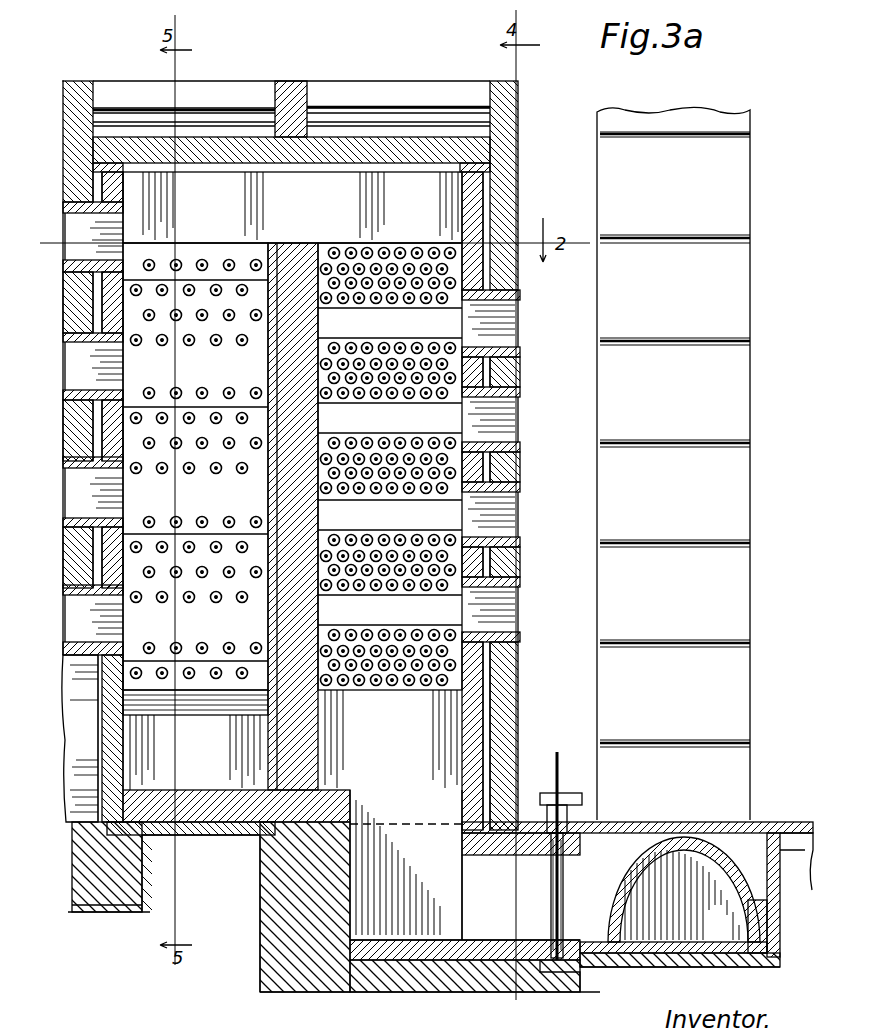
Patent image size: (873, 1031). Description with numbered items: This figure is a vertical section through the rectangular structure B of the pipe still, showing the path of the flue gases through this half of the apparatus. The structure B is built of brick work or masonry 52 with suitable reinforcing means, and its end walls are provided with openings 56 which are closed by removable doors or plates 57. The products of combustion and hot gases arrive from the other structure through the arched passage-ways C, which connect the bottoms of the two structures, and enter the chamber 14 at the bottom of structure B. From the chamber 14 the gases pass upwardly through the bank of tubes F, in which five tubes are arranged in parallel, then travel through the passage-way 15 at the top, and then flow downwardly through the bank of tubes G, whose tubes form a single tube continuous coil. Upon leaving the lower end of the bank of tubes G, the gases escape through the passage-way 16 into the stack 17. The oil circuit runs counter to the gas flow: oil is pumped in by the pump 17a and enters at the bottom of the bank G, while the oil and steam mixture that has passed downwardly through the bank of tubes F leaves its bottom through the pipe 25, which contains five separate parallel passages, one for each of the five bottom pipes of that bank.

The rectangular structure B is at (497, 128).
The passage-way 15 is at (304, 212).
The bank of tubes F is at (197, 303).
The bank of tubes G is at (408, 347).
The openings 56 is at (123, 228).
The removable doors or plates 57 is at (60, 355).
The brick work or masonry 52 is at (78, 435).
The pipe 25 is at (202, 708).
The arched passage-ways C is at (82, 795).
The chamber 14 is at (208, 772).
The passage-way 16 is at (530, 896).
The stack 17 is at (725, 550).
The pump 17a is at (566, 790).